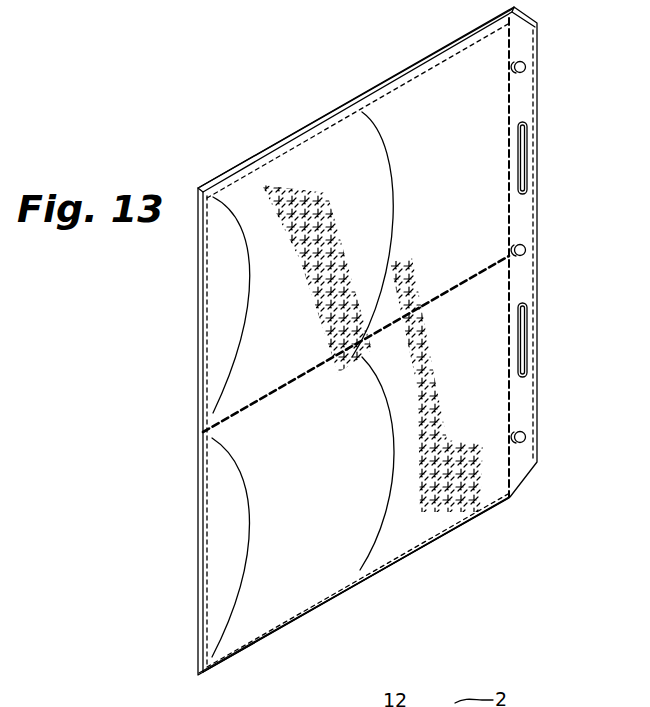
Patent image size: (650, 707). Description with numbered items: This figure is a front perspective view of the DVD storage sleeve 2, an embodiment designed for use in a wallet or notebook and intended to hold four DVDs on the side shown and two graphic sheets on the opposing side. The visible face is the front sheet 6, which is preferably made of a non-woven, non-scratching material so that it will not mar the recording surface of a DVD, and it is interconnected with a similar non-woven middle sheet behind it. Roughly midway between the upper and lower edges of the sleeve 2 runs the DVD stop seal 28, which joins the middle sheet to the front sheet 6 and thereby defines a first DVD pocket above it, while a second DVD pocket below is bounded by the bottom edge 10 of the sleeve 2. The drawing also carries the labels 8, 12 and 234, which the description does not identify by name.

The sleeve 2 is at (366, 66).
The front sheet 6 is at (425, 523).
The fold line 8 is at (198, 360).
The bottom edge 10 is at (538, 277).
The sealed edge 12 is at (422, 57).
The DVD stop seal 28 is at (332, 210).
The slot 234 is at (523, 213).